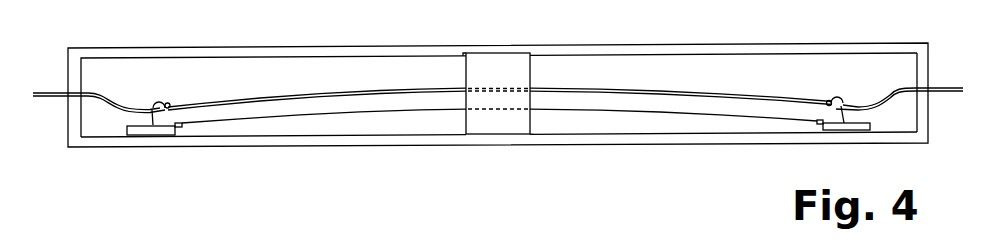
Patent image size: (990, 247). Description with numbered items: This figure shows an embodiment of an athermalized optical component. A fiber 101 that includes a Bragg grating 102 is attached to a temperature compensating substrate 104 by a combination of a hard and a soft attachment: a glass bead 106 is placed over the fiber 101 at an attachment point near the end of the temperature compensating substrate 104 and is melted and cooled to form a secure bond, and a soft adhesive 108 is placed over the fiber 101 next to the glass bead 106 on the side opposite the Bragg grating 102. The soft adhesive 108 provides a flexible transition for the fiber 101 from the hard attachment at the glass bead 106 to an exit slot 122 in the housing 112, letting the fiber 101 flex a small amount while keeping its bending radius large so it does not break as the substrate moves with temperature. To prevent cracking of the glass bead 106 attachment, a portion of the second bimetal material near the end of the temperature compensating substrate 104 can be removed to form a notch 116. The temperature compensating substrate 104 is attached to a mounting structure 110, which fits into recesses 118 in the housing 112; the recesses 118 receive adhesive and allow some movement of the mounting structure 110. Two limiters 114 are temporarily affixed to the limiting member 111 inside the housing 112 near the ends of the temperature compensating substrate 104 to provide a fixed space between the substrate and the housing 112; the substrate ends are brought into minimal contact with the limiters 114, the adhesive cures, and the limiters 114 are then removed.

The fiber 101 is at (621, 88).
The Bragg grating 102 is at (497, 87).
The temperature compensating substrate 104 is at (670, 110).
The glass bead 106 is at (168, 103).
The adhesive 108 is at (156, 102).
The mounting structure 110 is at (480, 122).
The limiting member 111 is at (299, 143).
The housing 112 is at (75, 127).
The limiters 114 is at (133, 137).
The notch 116 is at (178, 128).
The recesses 118 is at (465, 53).
The exit slot 122 is at (75, 95).